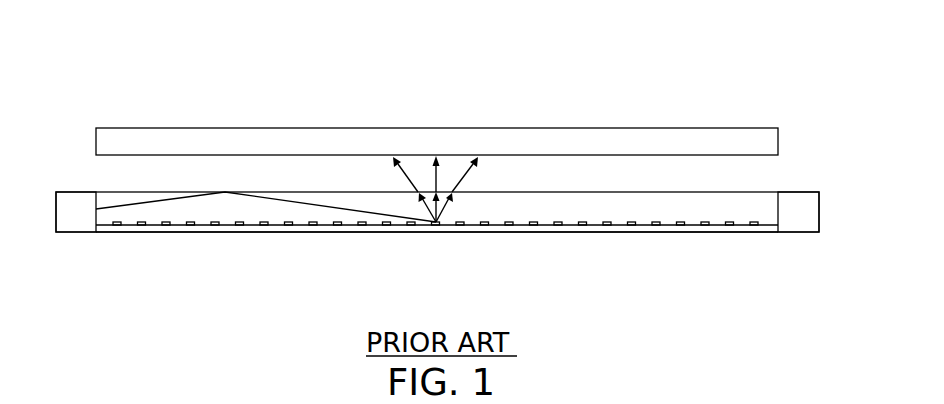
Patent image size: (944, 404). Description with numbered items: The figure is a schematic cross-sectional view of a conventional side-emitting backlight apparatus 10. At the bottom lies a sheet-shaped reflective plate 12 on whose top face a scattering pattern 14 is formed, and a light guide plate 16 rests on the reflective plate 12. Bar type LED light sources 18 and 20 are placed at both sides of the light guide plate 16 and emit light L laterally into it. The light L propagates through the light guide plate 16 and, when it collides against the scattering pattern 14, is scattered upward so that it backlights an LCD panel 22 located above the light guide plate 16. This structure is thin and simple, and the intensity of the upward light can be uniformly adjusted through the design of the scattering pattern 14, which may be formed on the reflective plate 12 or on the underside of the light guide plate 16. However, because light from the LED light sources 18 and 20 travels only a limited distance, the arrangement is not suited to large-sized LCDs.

The side-emitting backlight apparatus 10 is at (153, 31).
The reflective plate 12 is at (165, 232).
The scattering pattern 14 is at (247, 223).
The light guide plate 16 is at (618, 214).
The LED light source 18 is at (68, 200).
The LED light source 20 is at (803, 204).
The LCD panel 22 is at (733, 138).
The light L is at (331, 210).